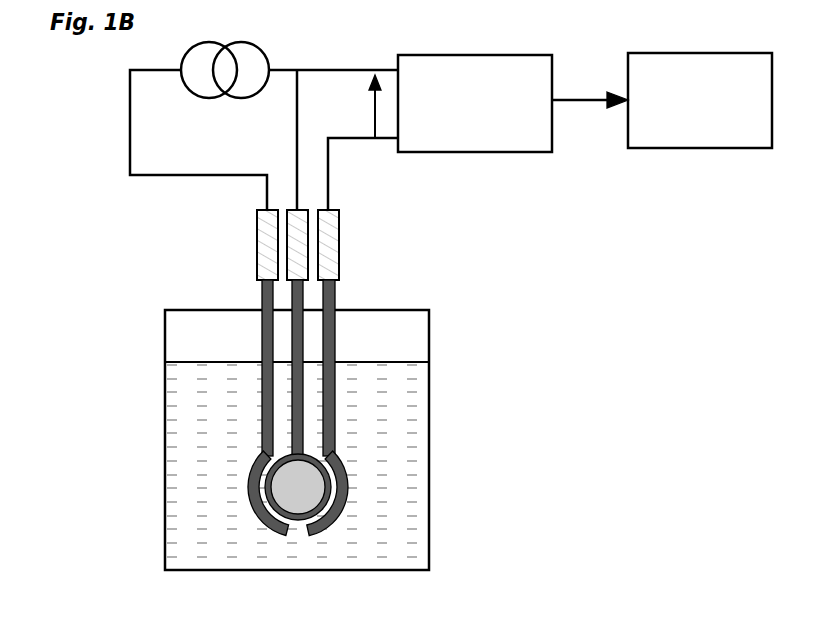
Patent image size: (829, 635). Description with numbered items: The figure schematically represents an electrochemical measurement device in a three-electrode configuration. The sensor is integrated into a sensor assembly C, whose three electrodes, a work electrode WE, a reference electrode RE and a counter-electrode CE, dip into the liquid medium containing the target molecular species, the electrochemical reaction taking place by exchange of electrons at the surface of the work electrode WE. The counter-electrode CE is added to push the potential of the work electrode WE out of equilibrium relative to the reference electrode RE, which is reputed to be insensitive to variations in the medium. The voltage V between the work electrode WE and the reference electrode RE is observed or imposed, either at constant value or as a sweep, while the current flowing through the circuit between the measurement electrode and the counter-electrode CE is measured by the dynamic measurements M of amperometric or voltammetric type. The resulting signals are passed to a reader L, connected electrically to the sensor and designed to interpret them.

The sensor assembly C is at (291, 373).
The counter-electrode CE is at (252, 470).
The work electrode WE is at (283, 502).
The reference electrode RE is at (345, 483).
The voltage V is at (368, 106).
The dynamic measurements M is at (475, 103).
The reader L is at (700, 100).